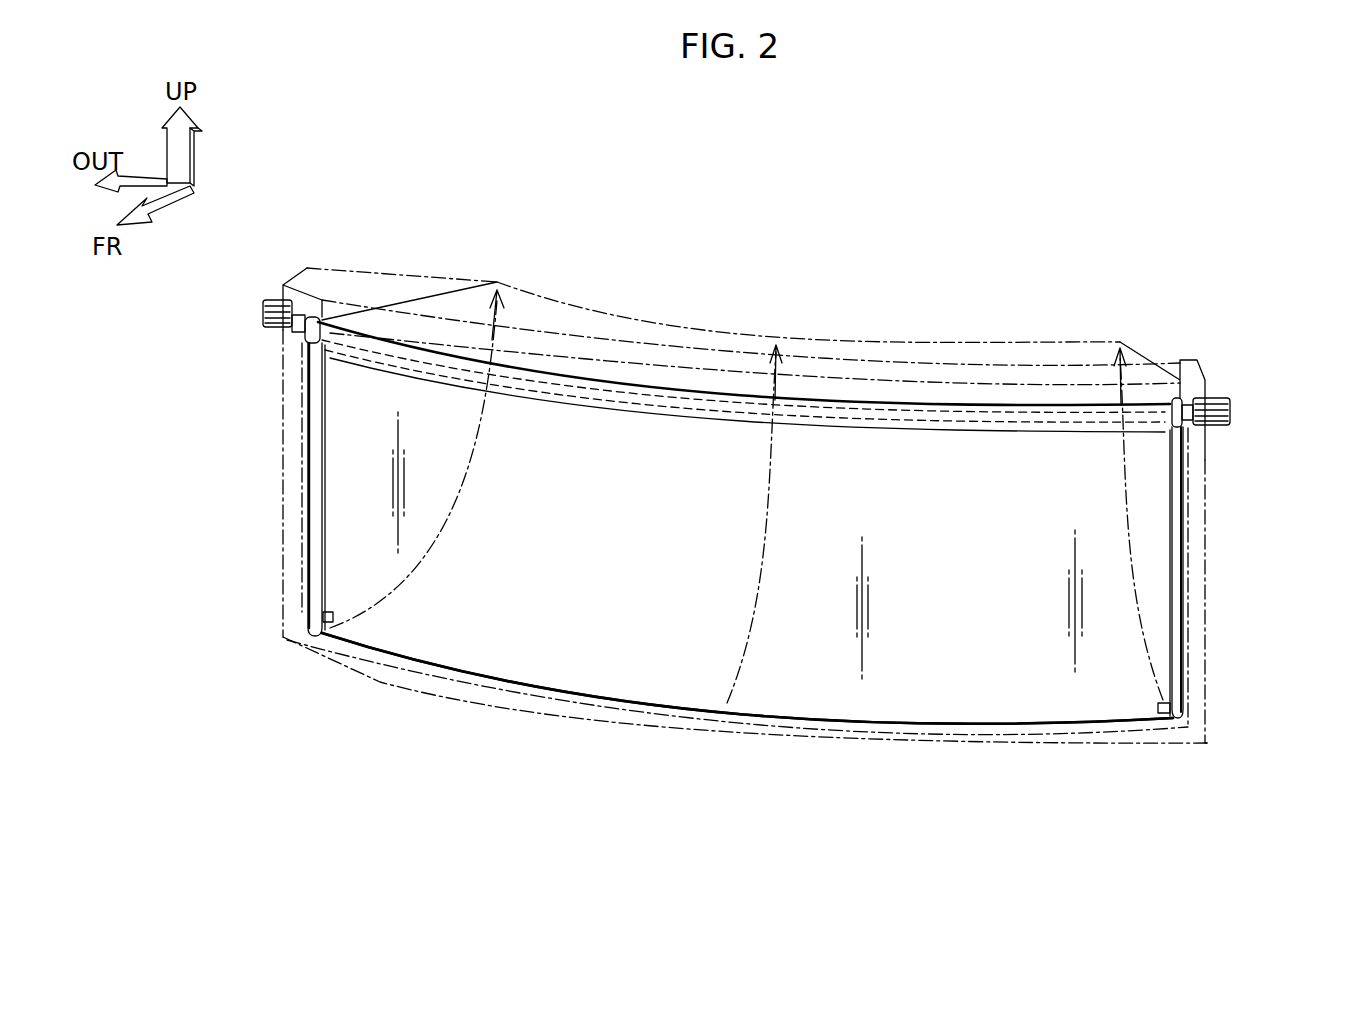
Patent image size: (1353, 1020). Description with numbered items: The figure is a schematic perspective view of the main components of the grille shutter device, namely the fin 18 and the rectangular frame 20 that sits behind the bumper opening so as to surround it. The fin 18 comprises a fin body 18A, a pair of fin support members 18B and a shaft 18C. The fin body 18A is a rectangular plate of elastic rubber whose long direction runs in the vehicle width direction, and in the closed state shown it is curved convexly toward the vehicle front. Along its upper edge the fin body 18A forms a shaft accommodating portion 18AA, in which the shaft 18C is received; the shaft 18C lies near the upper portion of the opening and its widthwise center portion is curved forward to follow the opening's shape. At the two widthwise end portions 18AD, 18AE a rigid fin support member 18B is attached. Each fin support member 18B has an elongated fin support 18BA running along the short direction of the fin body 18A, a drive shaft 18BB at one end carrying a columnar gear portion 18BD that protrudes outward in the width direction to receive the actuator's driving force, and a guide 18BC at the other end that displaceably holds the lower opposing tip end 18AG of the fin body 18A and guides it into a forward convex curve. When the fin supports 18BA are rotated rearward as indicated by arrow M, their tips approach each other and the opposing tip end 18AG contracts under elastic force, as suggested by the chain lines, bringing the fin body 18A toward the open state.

The fin 18 is at (470, 727).
The fin body 18A is at (568, 555).
The shaft accommodating portion 18AA is at (583, 397).
The end portion 18AD is at (327, 573).
The end portion 18AE is at (1162, 660).
The opposing tip end 18AG is at (643, 693).
The fin support member 18B is at (298, 476).
The fin support 18BA is at (312, 500).
The drive shaft 18BB is at (320, 328).
The guide 18BC is at (323, 617).
The gear portion 18BD is at (270, 300).
The shaft 18C is at (930, 420).
The frame 20 is at (727, 733).
The arrow M is at (455, 508).